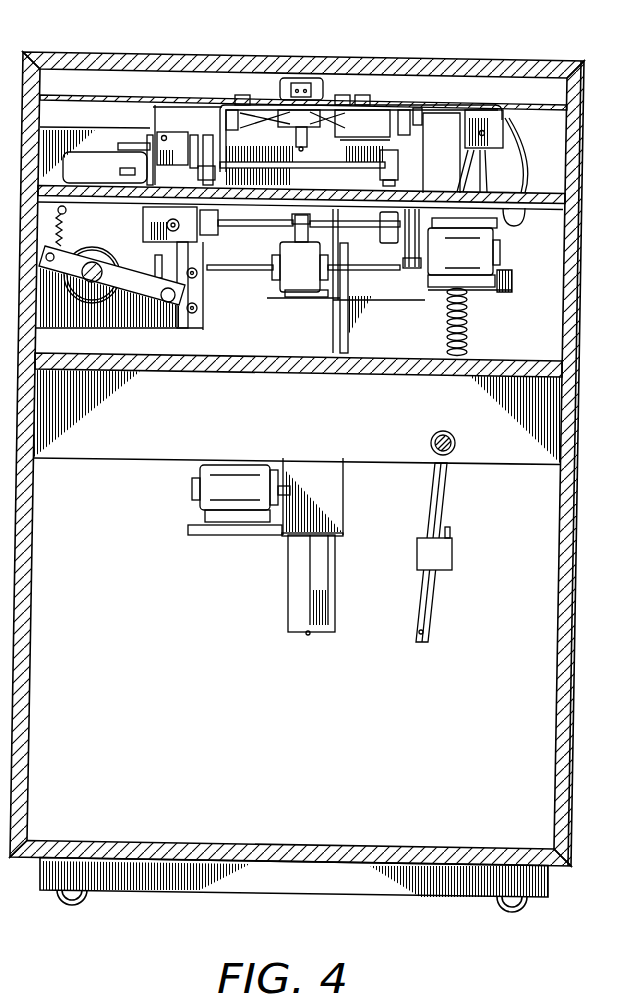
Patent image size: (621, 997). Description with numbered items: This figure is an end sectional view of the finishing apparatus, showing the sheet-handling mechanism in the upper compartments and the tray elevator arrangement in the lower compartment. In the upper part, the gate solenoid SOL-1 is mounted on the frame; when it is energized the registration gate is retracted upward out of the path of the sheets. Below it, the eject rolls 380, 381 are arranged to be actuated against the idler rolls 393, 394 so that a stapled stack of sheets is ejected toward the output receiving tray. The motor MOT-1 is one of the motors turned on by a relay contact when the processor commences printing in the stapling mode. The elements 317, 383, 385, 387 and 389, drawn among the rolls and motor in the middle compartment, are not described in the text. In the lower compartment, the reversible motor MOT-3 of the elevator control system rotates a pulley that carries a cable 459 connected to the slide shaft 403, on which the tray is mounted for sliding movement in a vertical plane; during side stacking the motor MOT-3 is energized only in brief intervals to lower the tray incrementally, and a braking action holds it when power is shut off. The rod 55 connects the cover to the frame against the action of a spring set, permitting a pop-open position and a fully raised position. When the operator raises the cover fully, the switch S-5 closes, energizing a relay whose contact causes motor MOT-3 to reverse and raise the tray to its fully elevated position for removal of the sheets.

The gate solenoid SOL-1 is at (323, 77).
The idler roll 393 is at (203, 135).
The idler roll 394 is at (402, 118).
The lever arm 317 is at (60, 232).
The eject roll 380 is at (285, 233).
The eject roll 381 is at (383, 243).
The gear housing 383 is at (262, 276).
The coil spring 385 is at (415, 268).
The guide posts 387 is at (407, 245).
The motor 389 is at (464, 252).
The motor MOT-1 is at (503, 262).
The reversible motor MOT-3 is at (192, 478).
The slide shaft 403 is at (335, 598).
The cable 459 is at (310, 586).
The rod 55 is at (432, 600).
The switch S-5 is at (452, 556).